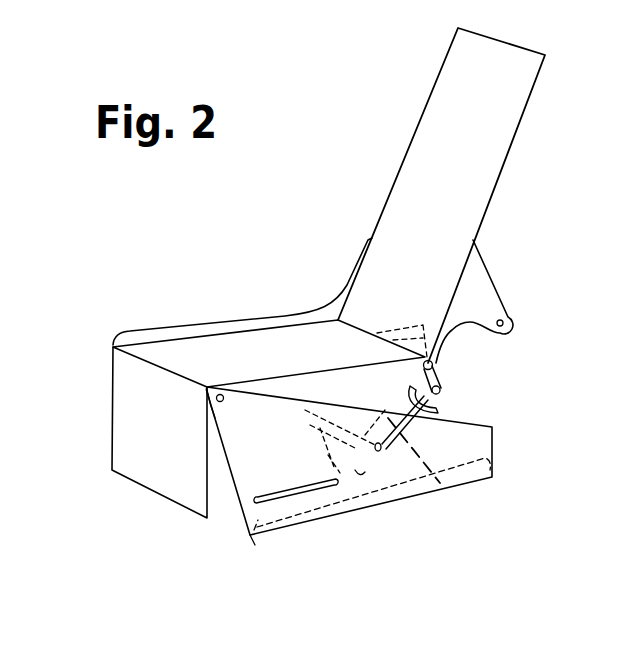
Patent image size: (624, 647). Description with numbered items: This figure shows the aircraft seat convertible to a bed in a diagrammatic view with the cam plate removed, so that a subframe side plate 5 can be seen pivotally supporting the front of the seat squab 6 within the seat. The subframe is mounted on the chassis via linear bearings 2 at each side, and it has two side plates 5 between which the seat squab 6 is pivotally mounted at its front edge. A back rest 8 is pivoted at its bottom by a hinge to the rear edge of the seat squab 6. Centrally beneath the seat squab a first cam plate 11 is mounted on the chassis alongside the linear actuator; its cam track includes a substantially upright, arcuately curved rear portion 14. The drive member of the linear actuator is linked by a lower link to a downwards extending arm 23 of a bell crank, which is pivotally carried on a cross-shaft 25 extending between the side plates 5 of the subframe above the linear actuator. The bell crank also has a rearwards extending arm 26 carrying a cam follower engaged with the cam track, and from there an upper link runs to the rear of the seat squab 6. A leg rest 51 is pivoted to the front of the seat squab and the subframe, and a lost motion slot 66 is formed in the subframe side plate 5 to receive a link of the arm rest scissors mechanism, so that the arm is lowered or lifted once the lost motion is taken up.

The linear bearings 2 is at (255, 552).
The side plates 5 is at (260, 462).
The seat squab 6 is at (280, 347).
The back rest 8 is at (443, 175).
The first cam plate 11 is at (445, 400).
The rear portion 14 is at (442, 408).
The downwards extending arm 23 is at (437, 493).
The cross-shaft 25 is at (370, 507).
The rearwards extending arm 26 is at (470, 490).
The leg rest 51 is at (152, 467).
The lost motion slot 66 is at (307, 497).